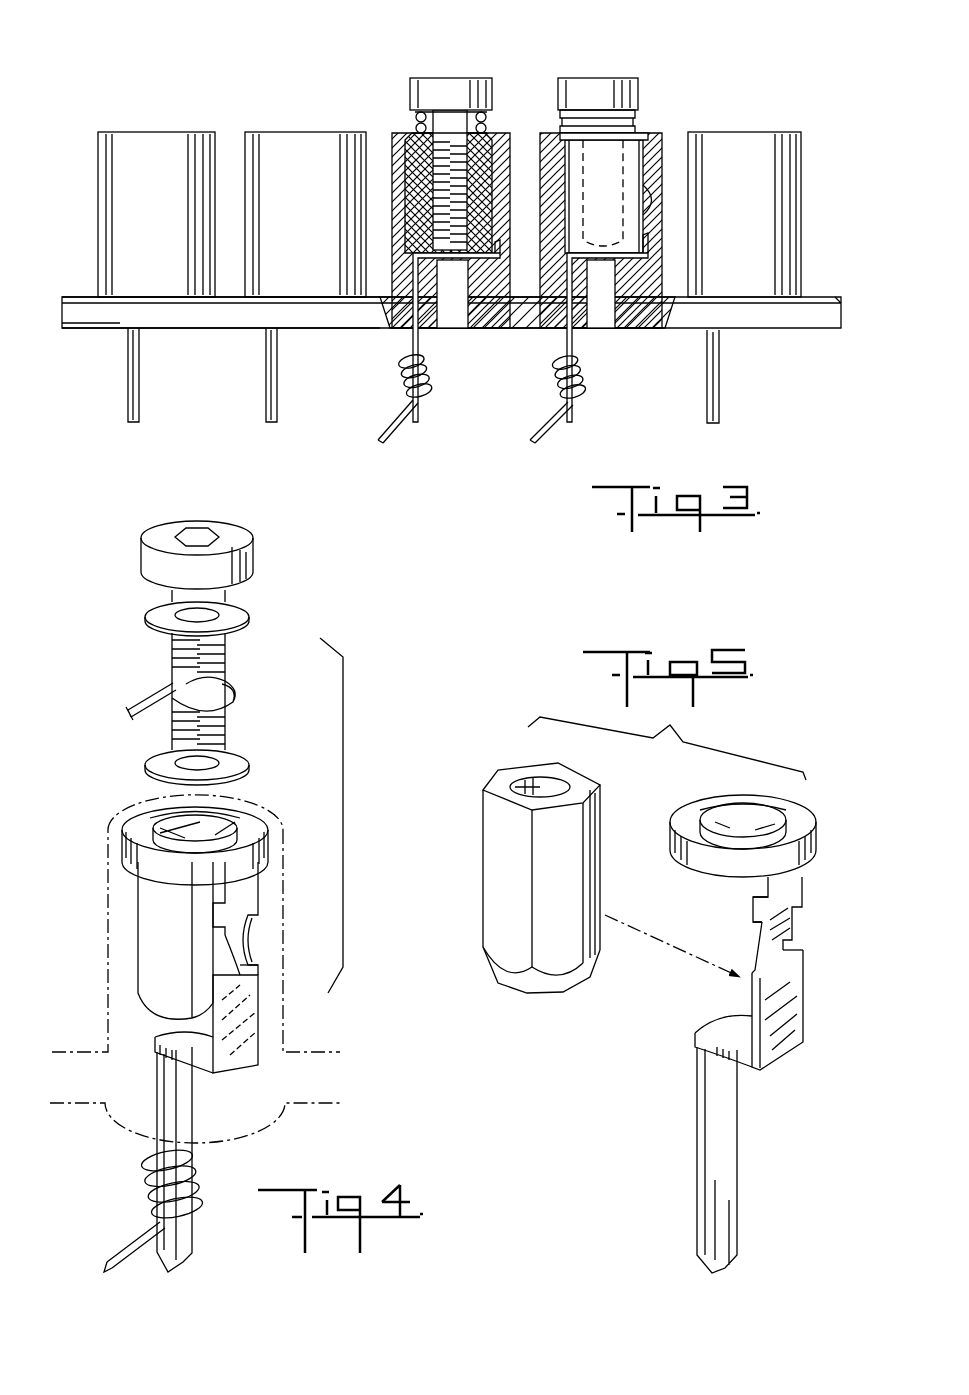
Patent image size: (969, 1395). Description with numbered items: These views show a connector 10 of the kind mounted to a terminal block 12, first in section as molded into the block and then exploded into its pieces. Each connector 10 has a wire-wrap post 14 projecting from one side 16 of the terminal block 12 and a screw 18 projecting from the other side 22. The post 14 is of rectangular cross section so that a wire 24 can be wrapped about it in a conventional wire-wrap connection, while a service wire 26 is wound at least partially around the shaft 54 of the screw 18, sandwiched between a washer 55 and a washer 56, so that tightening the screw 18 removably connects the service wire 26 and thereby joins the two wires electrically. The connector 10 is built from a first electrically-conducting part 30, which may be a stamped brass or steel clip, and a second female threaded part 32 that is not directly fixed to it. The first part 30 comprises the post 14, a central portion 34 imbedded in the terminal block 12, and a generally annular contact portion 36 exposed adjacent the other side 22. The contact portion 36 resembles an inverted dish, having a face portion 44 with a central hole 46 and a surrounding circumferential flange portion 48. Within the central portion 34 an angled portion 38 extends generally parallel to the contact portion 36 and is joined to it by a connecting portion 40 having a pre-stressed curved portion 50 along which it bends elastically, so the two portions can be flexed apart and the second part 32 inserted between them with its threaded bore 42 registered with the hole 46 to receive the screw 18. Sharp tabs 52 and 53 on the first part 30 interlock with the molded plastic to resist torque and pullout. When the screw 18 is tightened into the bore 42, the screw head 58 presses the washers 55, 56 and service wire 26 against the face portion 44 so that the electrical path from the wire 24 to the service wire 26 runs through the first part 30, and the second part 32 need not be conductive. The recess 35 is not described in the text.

In FIG. 3, the connector 10 is at (456, 68).
In FIG. 3, the terminal block 12 is at (808, 304).
In FIG. 3, the wire-wrap post 14 is at (421, 350).
In FIG. 4, the wire-wrap post 14 is at (165, 1124).
In FIG. 5, the wire-wrap post 14 is at (723, 1112).
In FIG. 3, the one side of terminal block 16 is at (86, 330).
In FIG. 3, the screw 18 is at (478, 80).
In FIG. 4, the screw 18 is at (245, 530).
In FIG. 3, the other side of terminal block 22 is at (86, 296).
In FIG. 3, the wire 24 is at (394, 430).
In FIG. 4, the wire 24 is at (115, 1252).
In FIG. 3, the service wire 26 is at (414, 122).
In FIG. 4, the service wire 26 is at (140, 700).
In FIG. 3, the first electrically-conducting part 30 is at (652, 148).
In FIG. 4, the first electrically-conducting part 30 is at (197, 1008).
In FIG. 5, the first electrically-conducting part 30 is at (775, 1019).
In FIG. 3, the second female threaded part 32 is at (562, 186).
In FIG. 4, the second female threaded part 32 is at (135, 980).
In FIG. 5, the second female threaded part 32 is at (514, 860).
In FIG. 3, the central portion 34 is at (498, 252).
In FIG. 4, the central portion 34 is at (240, 996).
In FIG. 5, the central portion 34 is at (806, 1016).
In FIG. 4, the recess 35 is at (225, 815).
In FIG. 4, the contact portion 36 is at (256, 824).
In FIG. 5, the contact portion 36 is at (805, 815).
In FIG. 3, the angled portion 38 is at (458, 262).
In FIG. 4, the angled portion 38 is at (200, 1075).
In FIG. 5, the angled portion 38 is at (720, 1034).
In FIG. 3, the connecting portion 40 is at (604, 196).
In FIG. 4, the connecting portion 40 is at (256, 966).
In FIG. 5, the connecting portion 40 is at (800, 968).
In FIG. 5, the threaded bore 42 is at (538, 786).
In FIG. 4, the face portion 44 is at (140, 818).
In FIG. 5, the face portion 44 is at (777, 806).
In FIG. 4, the central hole 46 is at (165, 812).
In FIG. 5, the central hole 46 is at (724, 820).
In FIG. 4, the flange portion 48 is at (170, 872).
In FIG. 5, the flange portion 48 is at (720, 862).
In FIG. 4, the pre-stressed curved portion 50 is at (243, 940).
In FIG. 5, the pre-stressed curved portion 50 is at (780, 941).
In FIG. 4, the tab 52 is at (255, 902).
In FIG. 5, the tab 52 is at (752, 918).
In FIG. 4, the tab 53 is at (210, 972).
In FIG. 5, the tab 53 is at (756, 972).
In FIG. 3, the shaft 54 is at (435, 168).
In FIG. 4, the shaft 54 is at (226, 690).
In FIG. 3, the washer 55 is at (490, 118).
In FIG. 4, the washer 55 is at (240, 613).
In FIG. 3, the washer 56 is at (492, 133).
In FIG. 4, the washer 56 is at (235, 755).
In FIG. 3, the screw head 58 is at (432, 86).
In FIG. 4, the screw head 58 is at (245, 562).